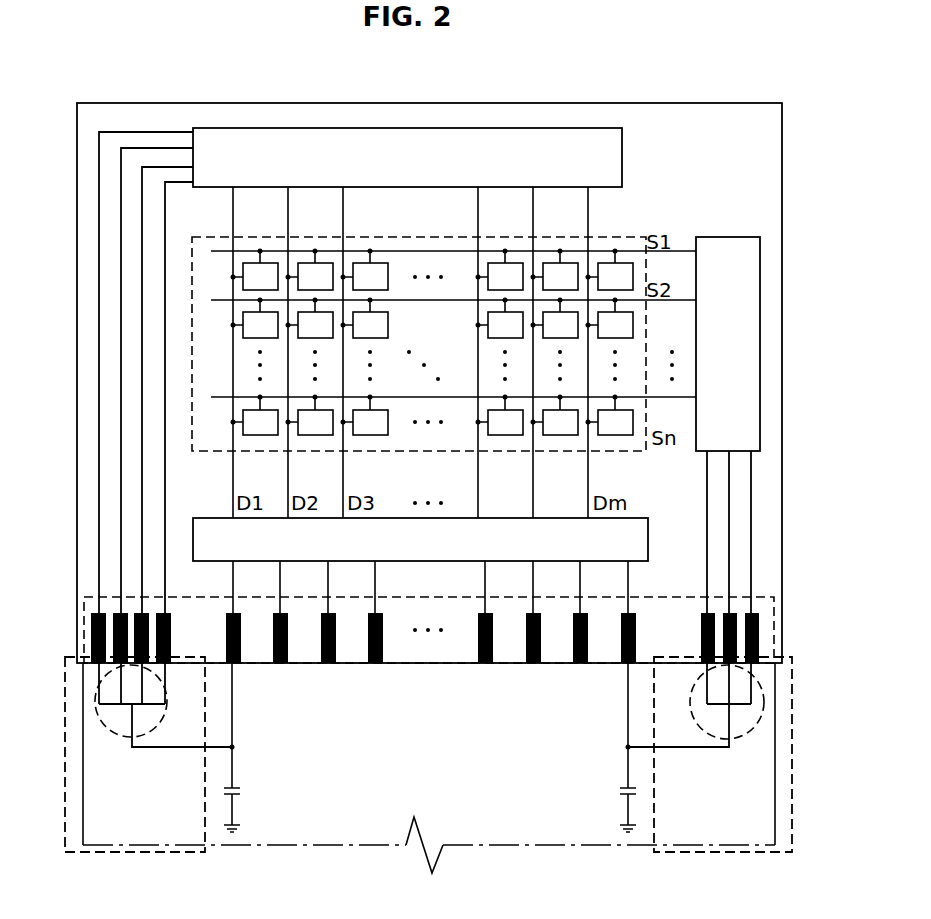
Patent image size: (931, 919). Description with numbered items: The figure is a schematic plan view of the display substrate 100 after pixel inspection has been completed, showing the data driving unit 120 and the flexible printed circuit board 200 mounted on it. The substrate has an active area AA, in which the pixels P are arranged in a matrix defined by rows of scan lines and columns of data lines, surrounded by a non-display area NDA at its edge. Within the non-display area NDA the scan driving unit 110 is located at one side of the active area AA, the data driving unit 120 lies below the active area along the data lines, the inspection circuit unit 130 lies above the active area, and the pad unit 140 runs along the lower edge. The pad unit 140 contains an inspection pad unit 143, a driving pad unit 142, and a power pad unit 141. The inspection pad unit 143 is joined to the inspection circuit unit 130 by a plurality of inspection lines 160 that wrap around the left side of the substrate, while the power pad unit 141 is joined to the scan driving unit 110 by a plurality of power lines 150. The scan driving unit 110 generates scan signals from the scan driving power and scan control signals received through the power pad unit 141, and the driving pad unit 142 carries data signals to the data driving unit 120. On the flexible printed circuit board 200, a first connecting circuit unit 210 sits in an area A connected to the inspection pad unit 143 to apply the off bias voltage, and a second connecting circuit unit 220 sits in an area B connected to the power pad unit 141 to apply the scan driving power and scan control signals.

The display substrate 100 is at (782, 140).
The scan driving unit 110 is at (727, 237).
The data driving unit 120 is at (642, 517).
The inspection circuit unit 130 is at (564, 127).
The pad unit 140 is at (774, 610).
The power pad unit 141 is at (760, 645).
The driving pad unit 142 is at (223, 670).
The inspection pad unit 143 is at (90, 630).
The power lines 150 is at (752, 518).
The inspection lines 160 is at (98, 285).
The flexible printed circuit board 200 is at (518, 845).
The first connecting circuit unit 210 is at (128, 737).
The second connecting circuit unit 220 is at (738, 737).
The pixel P is at (377, 263).
The active area AA is at (636, 237).
The non-display area NDA is at (704, 130).
The area A is at (140, 852).
The area B is at (718, 852).